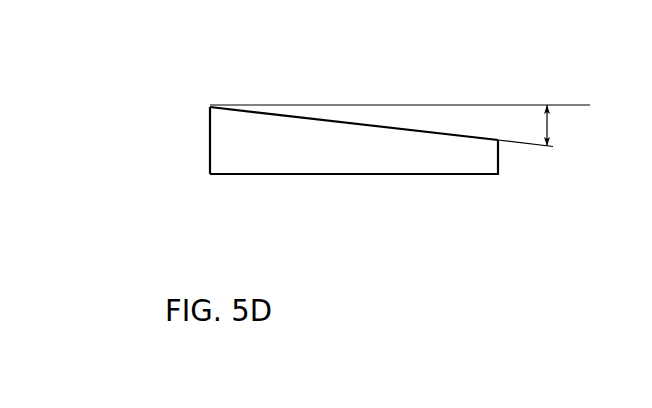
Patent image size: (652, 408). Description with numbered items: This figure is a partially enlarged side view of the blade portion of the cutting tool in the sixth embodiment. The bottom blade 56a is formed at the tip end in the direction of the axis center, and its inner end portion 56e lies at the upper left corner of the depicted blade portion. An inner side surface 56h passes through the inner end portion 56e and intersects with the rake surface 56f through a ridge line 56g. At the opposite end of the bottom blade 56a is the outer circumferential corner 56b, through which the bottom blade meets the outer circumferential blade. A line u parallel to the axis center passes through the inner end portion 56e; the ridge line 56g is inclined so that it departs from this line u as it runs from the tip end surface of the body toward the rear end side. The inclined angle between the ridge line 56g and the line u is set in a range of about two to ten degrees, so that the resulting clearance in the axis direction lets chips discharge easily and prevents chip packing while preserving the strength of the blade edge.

The bottom blade 56a is at (210, 133).
The outer circumferential corner 56b is at (210, 174).
The inner end portion 56e is at (209, 106).
The rake surface 56f is at (230, 155).
The ridge line 56g is at (345, 123).
The inner side surface 56h is at (285, 112).
The line u is at (560, 105).